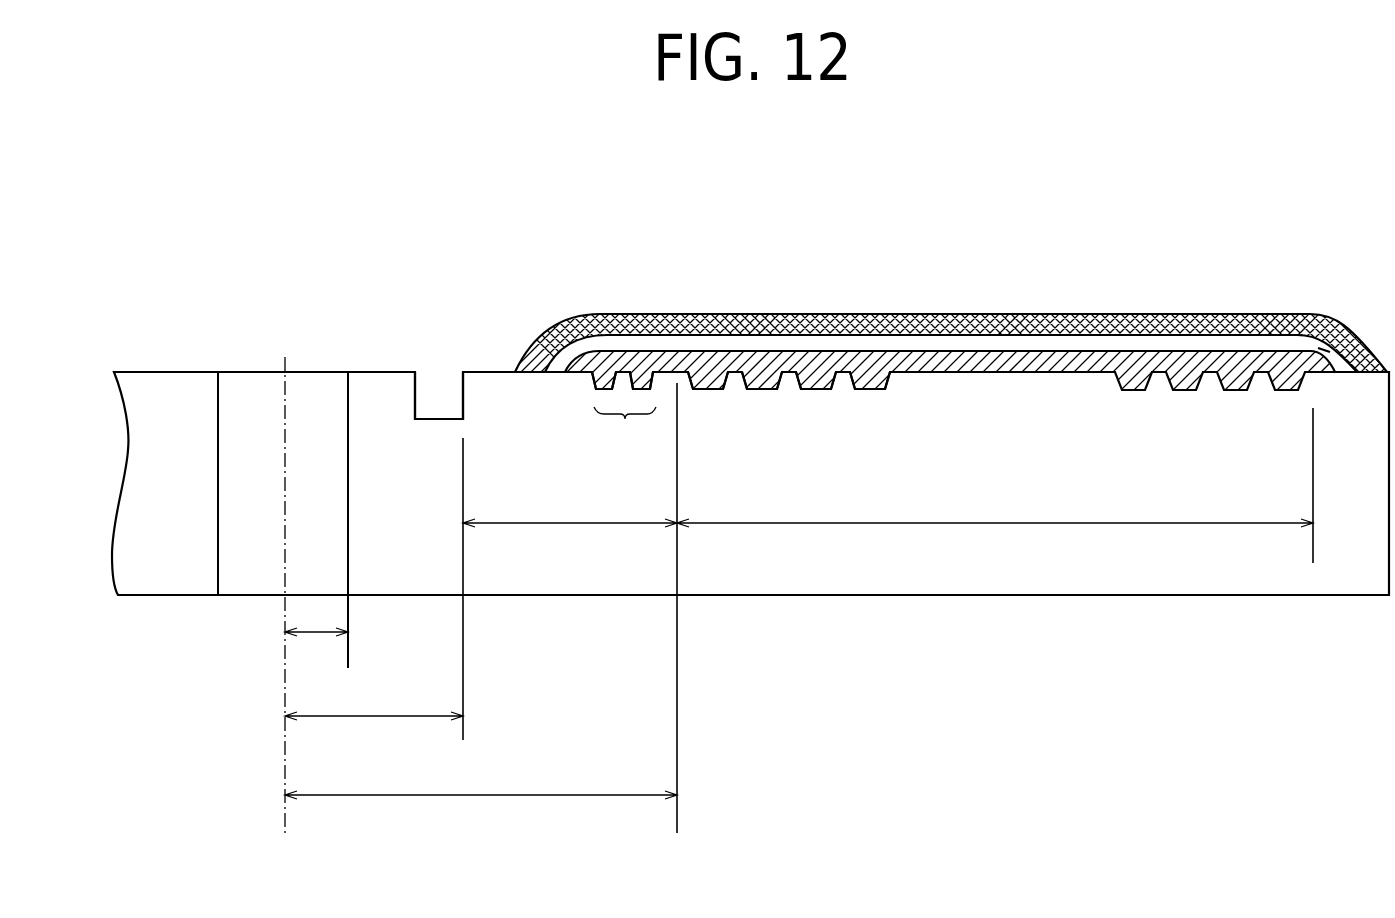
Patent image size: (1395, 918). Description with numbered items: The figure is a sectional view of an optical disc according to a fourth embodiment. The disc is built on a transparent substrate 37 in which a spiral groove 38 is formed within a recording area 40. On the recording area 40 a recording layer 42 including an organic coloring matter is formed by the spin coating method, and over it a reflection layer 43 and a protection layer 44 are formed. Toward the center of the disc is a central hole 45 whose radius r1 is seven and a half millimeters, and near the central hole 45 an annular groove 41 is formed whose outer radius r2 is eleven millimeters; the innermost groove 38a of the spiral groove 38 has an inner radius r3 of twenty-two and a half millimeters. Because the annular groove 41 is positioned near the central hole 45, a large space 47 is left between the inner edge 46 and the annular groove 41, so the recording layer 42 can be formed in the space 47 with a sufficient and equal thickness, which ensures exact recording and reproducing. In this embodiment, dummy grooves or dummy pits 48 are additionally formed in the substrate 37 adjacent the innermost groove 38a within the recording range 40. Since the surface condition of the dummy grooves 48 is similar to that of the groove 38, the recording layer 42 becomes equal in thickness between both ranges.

The transparent substrate 37 is at (903, 596).
The spiral groove 38 is at (880, 390).
The innermost groove 38a is at (712, 390).
The recording area 40 is at (1068, 523).
The annular groove 41 is at (463, 395).
The recording layer 42 is at (1028, 357).
The reflection layer 43 is at (1338, 336).
The protection layer 44 is at (1197, 318).
The central hole 45 is at (248, 385).
The inner edge 46 is at (677, 467).
The space 47 is at (560, 523).
The dummy grooves 48 is at (625, 419).
The radius of central hole r1 is at (318, 632).
The outer radius of annular groove r2 is at (373, 716).
The inner radius of innermost groove r3 is at (480, 795).